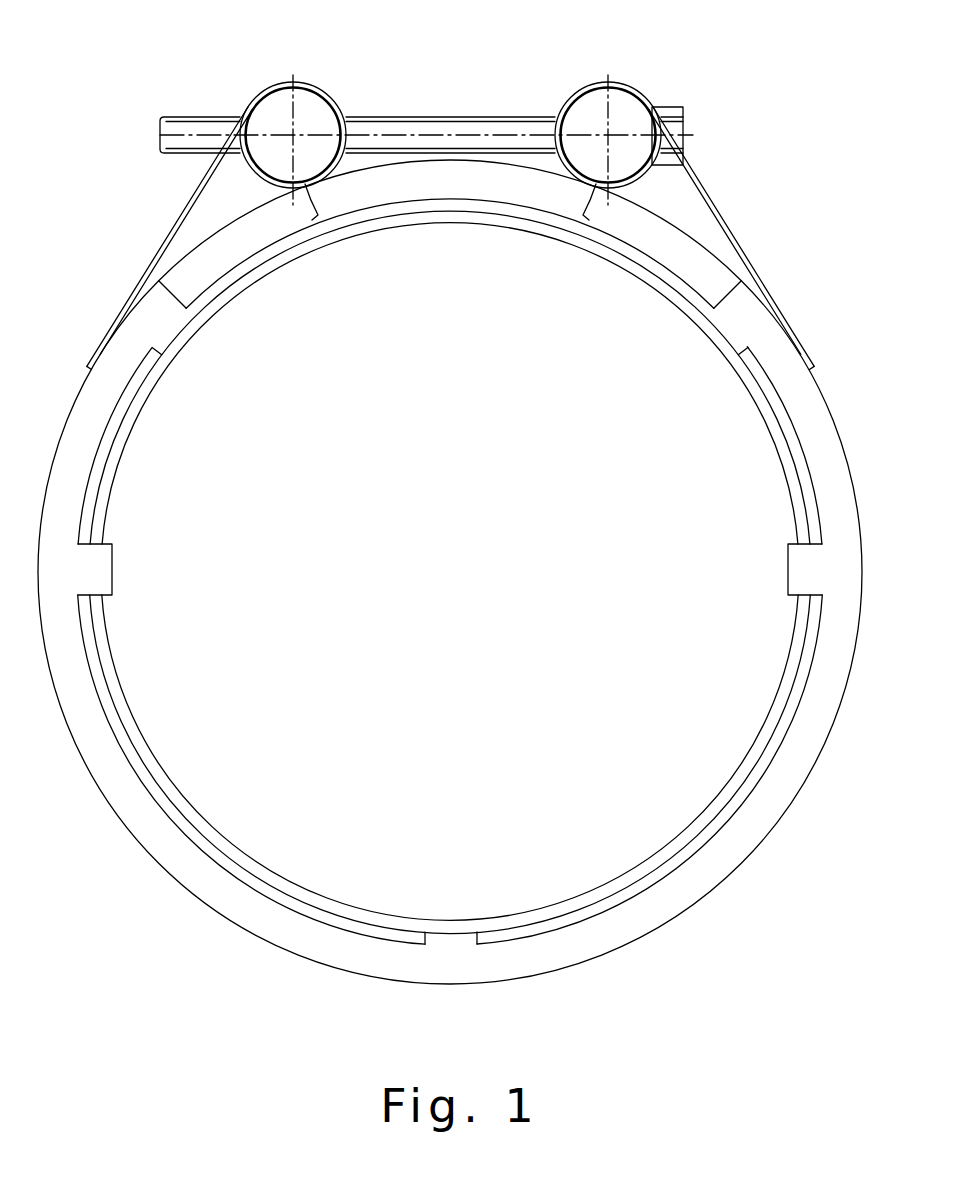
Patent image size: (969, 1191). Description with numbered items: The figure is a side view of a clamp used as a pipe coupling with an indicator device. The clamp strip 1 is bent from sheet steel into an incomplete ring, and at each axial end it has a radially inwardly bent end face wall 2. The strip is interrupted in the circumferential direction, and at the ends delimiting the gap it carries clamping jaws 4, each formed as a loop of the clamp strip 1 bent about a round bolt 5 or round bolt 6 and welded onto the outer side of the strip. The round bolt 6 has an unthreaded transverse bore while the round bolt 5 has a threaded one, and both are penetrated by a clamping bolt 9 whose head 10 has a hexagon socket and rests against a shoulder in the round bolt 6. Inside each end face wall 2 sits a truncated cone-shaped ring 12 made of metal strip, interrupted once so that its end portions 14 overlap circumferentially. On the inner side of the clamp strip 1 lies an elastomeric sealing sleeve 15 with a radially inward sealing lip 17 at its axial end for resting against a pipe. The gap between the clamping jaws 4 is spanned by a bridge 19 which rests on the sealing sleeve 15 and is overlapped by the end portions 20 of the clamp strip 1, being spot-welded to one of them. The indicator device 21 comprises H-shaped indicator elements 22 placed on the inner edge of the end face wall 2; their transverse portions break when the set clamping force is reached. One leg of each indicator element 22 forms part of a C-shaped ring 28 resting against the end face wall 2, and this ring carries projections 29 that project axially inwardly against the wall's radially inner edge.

The clamp strip 1 is at (728, 265).
The end face wall 2 is at (197, 272).
The clamping jaw 4 is at (262, 84).
The round bolt 5 is at (310, 113).
The round bolt 6 is at (593, 110).
The clamping bolt 9 is at (502, 117).
The head 10 is at (675, 115).
The truncated cone-shaped ring 12 is at (373, 217).
The end portions 14 is at (293, 908).
The sealing sleeve 15 is at (632, 268).
The sealing lip 17 is at (418, 223).
The bridge 19 is at (520, 190).
The end portions 20 is at (203, 238).
The indicator device 21 is at (91, 476).
The indicator element 22 is at (113, 557).
The C-shaped ring 28 is at (120, 353).
The projections 29 is at (155, 352).